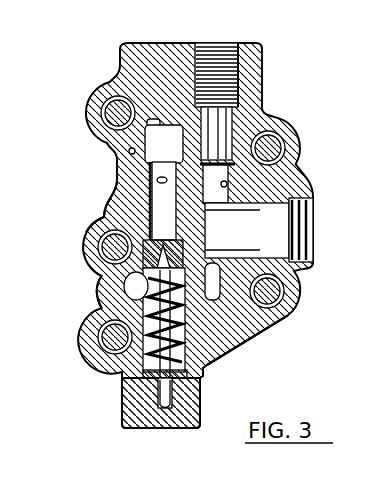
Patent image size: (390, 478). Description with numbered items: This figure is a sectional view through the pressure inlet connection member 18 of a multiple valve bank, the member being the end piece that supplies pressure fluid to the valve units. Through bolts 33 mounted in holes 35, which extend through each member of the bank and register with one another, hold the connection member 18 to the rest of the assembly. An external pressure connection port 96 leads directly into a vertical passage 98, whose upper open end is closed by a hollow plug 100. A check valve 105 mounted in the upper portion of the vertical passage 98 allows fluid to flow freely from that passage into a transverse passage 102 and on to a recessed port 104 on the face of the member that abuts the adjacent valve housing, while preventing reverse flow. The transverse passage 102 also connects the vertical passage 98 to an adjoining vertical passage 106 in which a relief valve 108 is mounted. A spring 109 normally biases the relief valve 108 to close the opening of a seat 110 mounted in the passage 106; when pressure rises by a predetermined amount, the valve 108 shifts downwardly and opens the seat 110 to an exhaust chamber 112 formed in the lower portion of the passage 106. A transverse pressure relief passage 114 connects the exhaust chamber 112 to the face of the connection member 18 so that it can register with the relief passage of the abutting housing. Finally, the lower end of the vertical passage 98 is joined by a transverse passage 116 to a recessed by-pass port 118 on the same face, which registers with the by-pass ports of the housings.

The pressure inlet connection member 18 is at (304, 81).
The through bolts 33 is at (101, 113).
The holes 35 is at (86, 123).
The external pressure connection port 96 is at (316, 242).
The vertical passage 98 is at (227, 186).
The hollow plug 100 is at (222, 45).
The transverse passage 102 is at (157, 118).
The recessed port 104 is at (129, 151).
The check valve 105 is at (235, 116).
The vertical passage 106 is at (152, 178).
The relief valve 108 is at (113, 210).
The spring 109 is at (204, 374).
The seat 110 is at (100, 228).
The exhaust chamber 112 is at (90, 312).
The transverse pressure relief passage 114 is at (124, 283).
The transverse passage 116 is at (219, 302).
The recessed by-pass port 118 is at (232, 346).